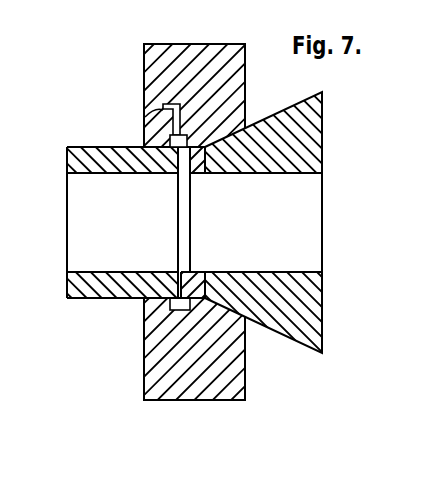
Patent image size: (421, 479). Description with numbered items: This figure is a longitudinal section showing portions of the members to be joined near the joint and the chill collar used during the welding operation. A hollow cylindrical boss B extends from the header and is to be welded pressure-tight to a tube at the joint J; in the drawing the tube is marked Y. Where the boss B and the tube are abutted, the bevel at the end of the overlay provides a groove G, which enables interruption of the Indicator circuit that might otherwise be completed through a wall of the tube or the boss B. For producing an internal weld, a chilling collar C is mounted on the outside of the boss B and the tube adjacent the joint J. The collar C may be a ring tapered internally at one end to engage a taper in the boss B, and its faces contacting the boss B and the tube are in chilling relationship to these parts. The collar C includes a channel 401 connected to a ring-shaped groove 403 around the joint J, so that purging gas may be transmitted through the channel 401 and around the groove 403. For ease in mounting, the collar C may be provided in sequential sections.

The chilling collar C is at (152, 64).
The boss B is at (297, 112).
The tube Y is at (110, 292).
The joint J is at (177, 153).
The groove G is at (185, 275).
The channel 401 is at (165, 104).
The ring-shaped groove 403 is at (171, 137).